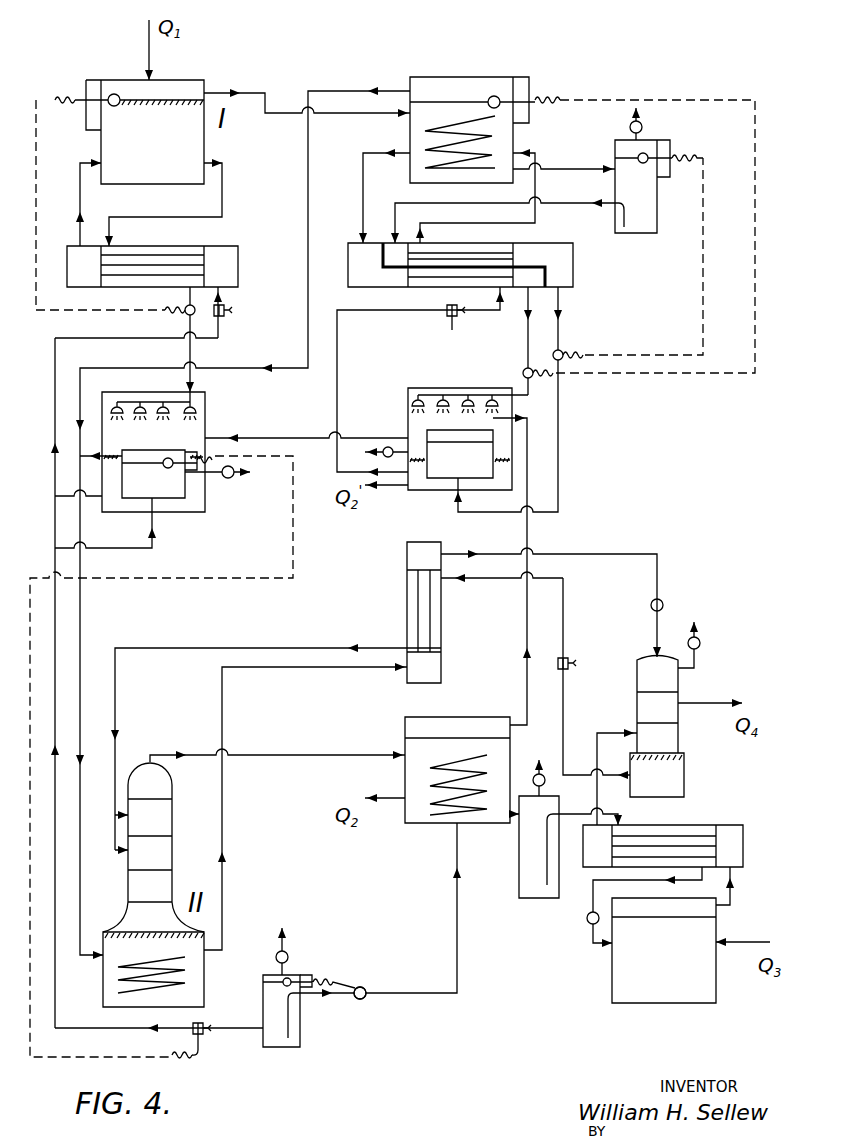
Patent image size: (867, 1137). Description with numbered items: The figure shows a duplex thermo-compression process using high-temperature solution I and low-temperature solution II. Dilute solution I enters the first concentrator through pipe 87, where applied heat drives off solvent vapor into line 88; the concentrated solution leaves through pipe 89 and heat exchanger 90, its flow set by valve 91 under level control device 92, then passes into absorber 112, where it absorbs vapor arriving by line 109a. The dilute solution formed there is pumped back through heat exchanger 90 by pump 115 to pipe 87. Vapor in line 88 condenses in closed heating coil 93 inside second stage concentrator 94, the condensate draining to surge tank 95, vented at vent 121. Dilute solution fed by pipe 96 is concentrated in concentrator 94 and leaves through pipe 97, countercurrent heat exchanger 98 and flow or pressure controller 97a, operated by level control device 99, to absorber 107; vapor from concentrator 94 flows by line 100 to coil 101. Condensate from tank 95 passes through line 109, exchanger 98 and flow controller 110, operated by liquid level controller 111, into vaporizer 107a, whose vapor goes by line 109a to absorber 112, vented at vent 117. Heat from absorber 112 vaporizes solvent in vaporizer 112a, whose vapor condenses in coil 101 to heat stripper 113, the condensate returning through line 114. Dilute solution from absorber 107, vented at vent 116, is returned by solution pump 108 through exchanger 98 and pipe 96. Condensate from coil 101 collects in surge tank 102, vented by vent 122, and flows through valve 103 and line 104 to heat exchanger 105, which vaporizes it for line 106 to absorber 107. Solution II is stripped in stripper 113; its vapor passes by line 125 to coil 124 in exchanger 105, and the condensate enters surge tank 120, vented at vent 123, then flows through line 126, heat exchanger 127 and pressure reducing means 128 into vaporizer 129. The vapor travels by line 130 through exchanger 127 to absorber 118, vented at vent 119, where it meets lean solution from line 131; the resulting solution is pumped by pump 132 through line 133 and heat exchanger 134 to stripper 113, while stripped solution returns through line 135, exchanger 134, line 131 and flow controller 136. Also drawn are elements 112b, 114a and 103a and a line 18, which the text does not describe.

The level control device 92 is at (98, 84).
The line 88 is at (258, 86).
The line 100 is at (81, 624).
The second stage concentrator 94 is at (462, 78).
The closed heating coil 93 is at (438, 147).
The level control device 99 is at (537, 98).
The pipe 97 is at (362, 194).
The pipe 96 is at (537, 222).
The line 109 is at (394, 210).
The countercurrent heat exchanger 98 is at (573, 279).
The surge tank 95 is at (640, 238).
The liquid level controller 111 is at (672, 156).
The vent 121 is at (630, 126).
The pipe 87 is at (78, 194).
The pipe 89 is at (222, 194).
The heat exchanger 90 is at (238, 278).
The valve 91 is at (186, 316).
The pump 115 is at (232, 313).
The absorber 112 is at (205, 416).
The vaporizer 112a is at (159, 474).
The level controller 112b is at (192, 452).
The line 18 is at (101, 446).
The vent 117 is at (228, 478).
The line 109a is at (302, 440).
The line 114 is at (134, 552).
The control valve 114a is at (204, 1036).
The absorber 107 is at (408, 412).
The vaporizer 107a is at (460, 454).
The vent 116 is at (385, 458).
The solution pump 108 is at (446, 318).
The flow or pressure controller 97a is at (523, 370).
The flow controller and pressure reducing means 110 is at (563, 354).
The line 106 is at (522, 530).
The heat exchanger 134 is at (406, 564).
The line 131 is at (606, 556).
The flow controller 136 is at (651, 601).
The line 133 is at (565, 640).
The pump 132 is at (580, 660).
The absorber 118 is at (657, 727).
The vent 119 is at (700, 644).
The line 130 is at (610, 732).
The heat exchanger 127 is at (744, 838).
The line 126 is at (578, 810).
The pressure reducing and flow controlling means 128 is at (587, 918).
The vaporizer 129 is at (664, 950).
The surge tank 120 is at (533, 900).
The vent 123 is at (534, 778).
The heat exchanger 105 is at (430, 824).
The coil 124 is at (488, 752).
The line 125 is at (314, 754).
The line 135 is at (223, 828).
The line 104 is at (456, 934).
The valve 103 is at (361, 986).
The stripper 113 is at (153, 847).
The coil 101 is at (184, 956).
The surge tank 102 is at (302, 1032).
The level controller 103a is at (308, 974).
The vent 122 is at (276, 954).